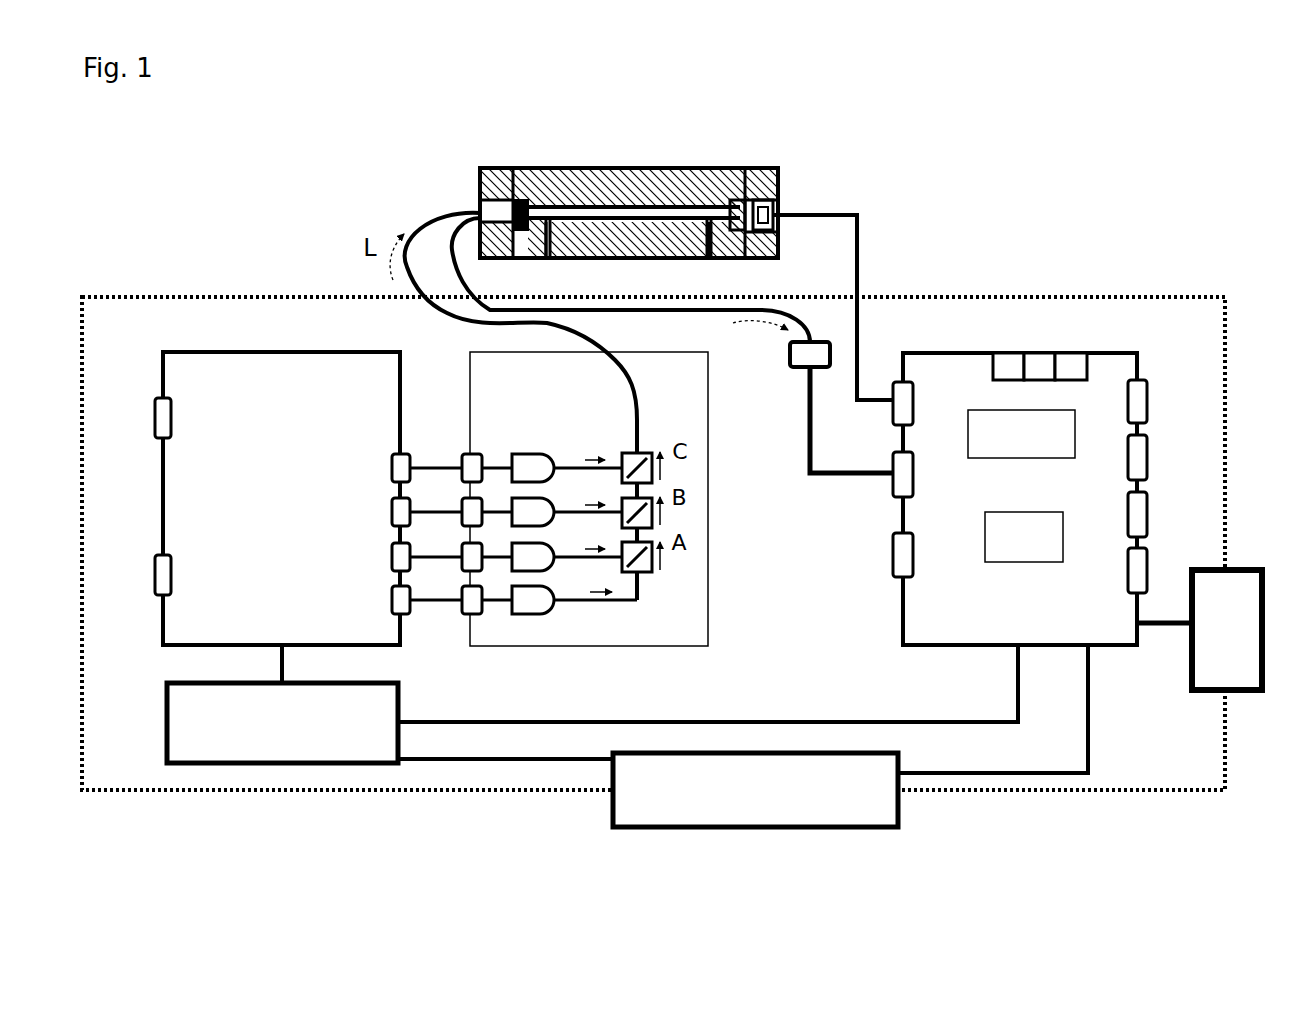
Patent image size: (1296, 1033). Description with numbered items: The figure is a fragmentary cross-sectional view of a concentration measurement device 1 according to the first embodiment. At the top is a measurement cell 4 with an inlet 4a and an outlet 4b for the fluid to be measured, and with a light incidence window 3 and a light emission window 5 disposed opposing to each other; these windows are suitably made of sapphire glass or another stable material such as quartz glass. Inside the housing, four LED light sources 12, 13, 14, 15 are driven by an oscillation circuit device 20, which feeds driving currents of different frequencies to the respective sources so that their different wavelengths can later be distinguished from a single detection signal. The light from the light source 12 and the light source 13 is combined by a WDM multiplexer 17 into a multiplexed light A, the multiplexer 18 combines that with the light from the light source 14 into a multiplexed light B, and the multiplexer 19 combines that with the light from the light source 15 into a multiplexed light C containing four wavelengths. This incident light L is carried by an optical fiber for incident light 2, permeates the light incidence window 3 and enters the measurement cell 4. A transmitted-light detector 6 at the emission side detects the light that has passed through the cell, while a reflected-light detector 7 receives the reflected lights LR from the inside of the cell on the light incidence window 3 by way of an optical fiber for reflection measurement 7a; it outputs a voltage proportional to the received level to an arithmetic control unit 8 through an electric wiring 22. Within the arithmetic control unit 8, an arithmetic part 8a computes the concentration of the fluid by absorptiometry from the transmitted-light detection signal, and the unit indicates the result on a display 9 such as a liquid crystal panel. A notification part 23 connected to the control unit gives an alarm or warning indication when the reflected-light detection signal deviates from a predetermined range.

The concentration measurement device 1 is at (1015, 204).
The optical fiber for incident light 2 is at (442, 218).
The light incidence window 3 is at (532, 168).
The measurement cell 4 is at (616, 164).
The inlet 4a is at (547, 260).
The outlet 4b is at (710, 260).
The light emission window 5 is at (731, 168).
The transmitted-light detector 6 is at (780, 203).
The reflected-light detector 7 is at (795, 370).
The optical fiber for reflection measurement 7a is at (688, 310).
The arithmetic control unit 8 is at (1103, 352).
The arithmetic part 8a is at (1063, 545).
The display 9 is at (630, 828).
The light source 12 is at (518, 608).
The light source 13 is at (551, 524).
The light source 14 is at (548, 570).
The light source 15 is at (518, 455).
The WDM multiplexer 17 is at (652, 562).
The WDM multiplexer 18 is at (652, 517).
The WDM multiplexer 19 is at (652, 472).
The oscillation circuit device 20 is at (258, 350).
The electric wiring 22 is at (855, 476).
The notification part 23 is at (1262, 590).